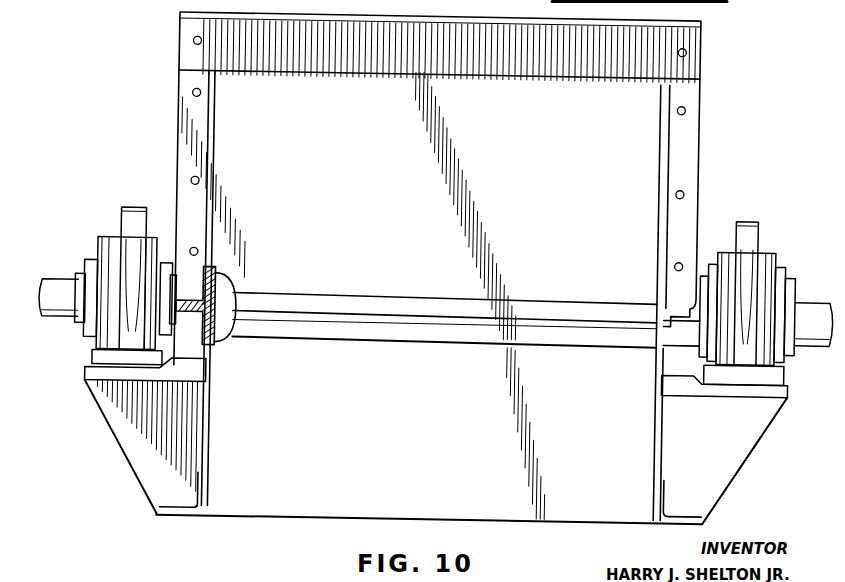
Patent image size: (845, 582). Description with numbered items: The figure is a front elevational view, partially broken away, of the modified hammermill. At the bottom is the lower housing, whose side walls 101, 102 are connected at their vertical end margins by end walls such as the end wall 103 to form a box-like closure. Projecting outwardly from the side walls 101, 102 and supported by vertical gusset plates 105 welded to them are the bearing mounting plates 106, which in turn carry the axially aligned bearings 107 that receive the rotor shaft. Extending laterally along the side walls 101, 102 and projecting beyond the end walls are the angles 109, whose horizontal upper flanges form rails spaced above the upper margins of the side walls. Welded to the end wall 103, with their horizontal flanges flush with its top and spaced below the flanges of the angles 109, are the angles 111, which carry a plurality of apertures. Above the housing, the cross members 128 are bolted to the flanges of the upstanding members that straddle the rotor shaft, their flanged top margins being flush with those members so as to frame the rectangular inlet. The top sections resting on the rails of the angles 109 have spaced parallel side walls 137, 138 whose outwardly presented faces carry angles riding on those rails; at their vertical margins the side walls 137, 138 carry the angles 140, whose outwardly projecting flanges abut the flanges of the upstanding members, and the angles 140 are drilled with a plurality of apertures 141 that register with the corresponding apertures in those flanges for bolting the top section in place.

The side wall 101 is at (213, 352).
The side wall 102 is at (670, 439).
The end wall 103 is at (635, 513).
The vertical gusset plate 105 is at (145, 478).
The bearing mounting plate 106 is at (797, 383).
The bearing 107 is at (779, 244).
The angle 109 is at (670, 323).
The angle 111 is at (316, 334).
The cross member 128 is at (182, 43).
The side wall 137 is at (212, 138).
The side wall 138 is at (673, 153).
The angle 140 is at (688, 185).
The aperture 141 is at (688, 100).